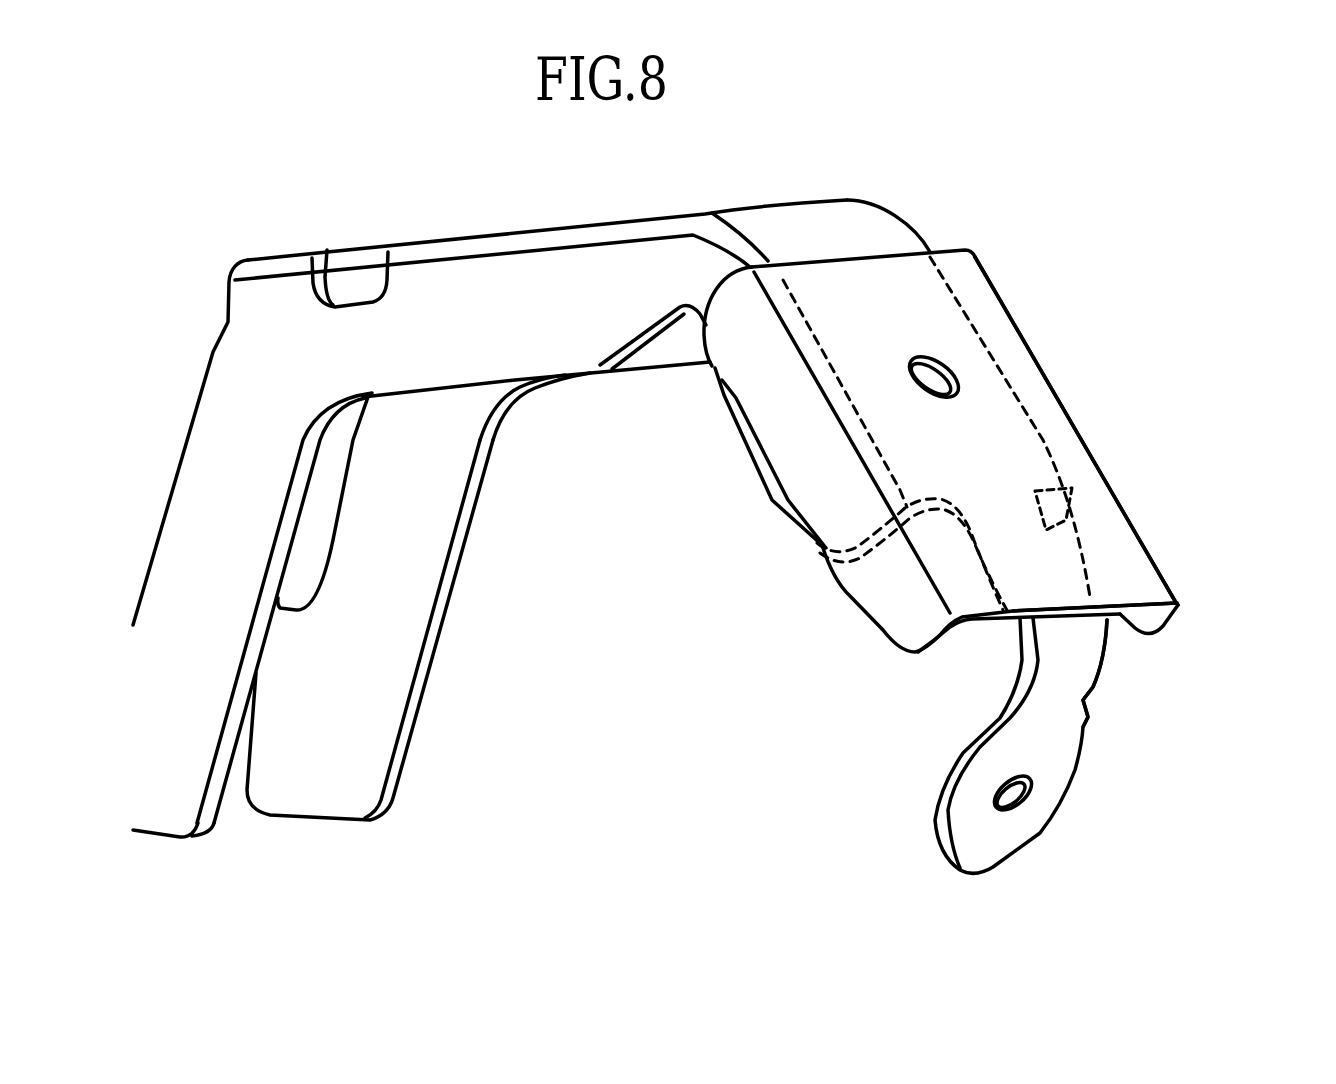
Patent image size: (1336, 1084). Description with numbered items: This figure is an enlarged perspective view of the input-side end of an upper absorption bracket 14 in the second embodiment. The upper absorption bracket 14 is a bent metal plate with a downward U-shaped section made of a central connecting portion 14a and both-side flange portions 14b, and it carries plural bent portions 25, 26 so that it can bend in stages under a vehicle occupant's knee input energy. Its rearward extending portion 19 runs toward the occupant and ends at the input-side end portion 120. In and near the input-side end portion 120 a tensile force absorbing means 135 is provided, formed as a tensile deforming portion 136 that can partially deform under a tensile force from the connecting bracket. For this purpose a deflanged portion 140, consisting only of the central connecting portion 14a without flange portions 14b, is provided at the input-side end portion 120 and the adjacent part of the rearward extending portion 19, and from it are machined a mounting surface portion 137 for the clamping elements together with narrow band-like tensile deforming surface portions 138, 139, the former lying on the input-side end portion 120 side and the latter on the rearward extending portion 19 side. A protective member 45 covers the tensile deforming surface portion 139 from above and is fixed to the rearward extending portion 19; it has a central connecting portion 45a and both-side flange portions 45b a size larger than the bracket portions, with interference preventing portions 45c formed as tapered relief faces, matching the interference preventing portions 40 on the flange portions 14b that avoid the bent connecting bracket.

The upper absorption bracket 14 is at (572, 467).
The central connecting portion 14a is at (850, 250).
The both-side flange portions 14b is at (570, 347).
The rearward extending portion 19 is at (958, 230).
The bent portion 25 is at (258, 256).
The bent portion 26 is at (783, 203).
The interference preventing portion 40 is at (1001, 516).
The protective member 45 is at (1001, 423).
The central connecting portion 45a is at (927, 542).
The both-side flange portions 45b is at (888, 590).
The interference preventing portion 45c is at (890, 637).
The input-side end portion 120 is at (1102, 745).
The tensile force absorbing means 135 is at (1166, 499).
The tensile deforming portion 136 is at (1073, 538).
The mounting surface portion 137 is at (1058, 801).
The tensile deforming surface portion 138 is at (1146, 673).
The tensile deforming surface portion 139 is at (1060, 583).
The deflanged portion 140 is at (1123, 647).